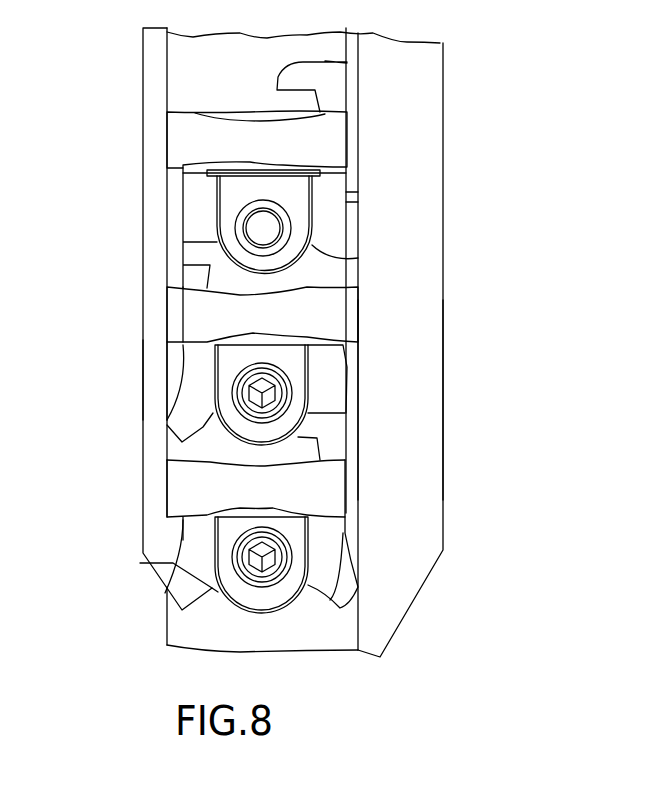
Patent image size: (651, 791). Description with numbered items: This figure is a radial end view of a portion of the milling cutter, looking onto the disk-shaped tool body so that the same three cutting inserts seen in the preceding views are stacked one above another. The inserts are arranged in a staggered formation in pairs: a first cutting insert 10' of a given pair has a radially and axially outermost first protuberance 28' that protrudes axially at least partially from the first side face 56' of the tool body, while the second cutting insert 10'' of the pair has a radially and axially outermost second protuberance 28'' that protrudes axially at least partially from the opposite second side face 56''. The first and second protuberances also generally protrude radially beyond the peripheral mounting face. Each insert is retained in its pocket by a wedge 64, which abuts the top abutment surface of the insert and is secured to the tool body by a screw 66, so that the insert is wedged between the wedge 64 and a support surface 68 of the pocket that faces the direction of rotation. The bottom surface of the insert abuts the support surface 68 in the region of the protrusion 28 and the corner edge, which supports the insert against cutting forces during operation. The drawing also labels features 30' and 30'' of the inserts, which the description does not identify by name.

The second cutting insert 10'' is at (417, 160).
The first cutting insert 10' is at (420, 359).
The second protuberance 28'' is at (200, 139).
The first protuberance 28' is at (353, 321).
The protrusion 28 is at (199, 477).
The clamp body 30'' is at (359, 217).
The clamp body 30' is at (180, 392).
The second side face 56'' is at (107, 380).
The first side face 56' is at (447, 400).
The wedge 64 is at (295, 528).
The screw 66 is at (240, 560).
The support surface 68 is at (265, 460).